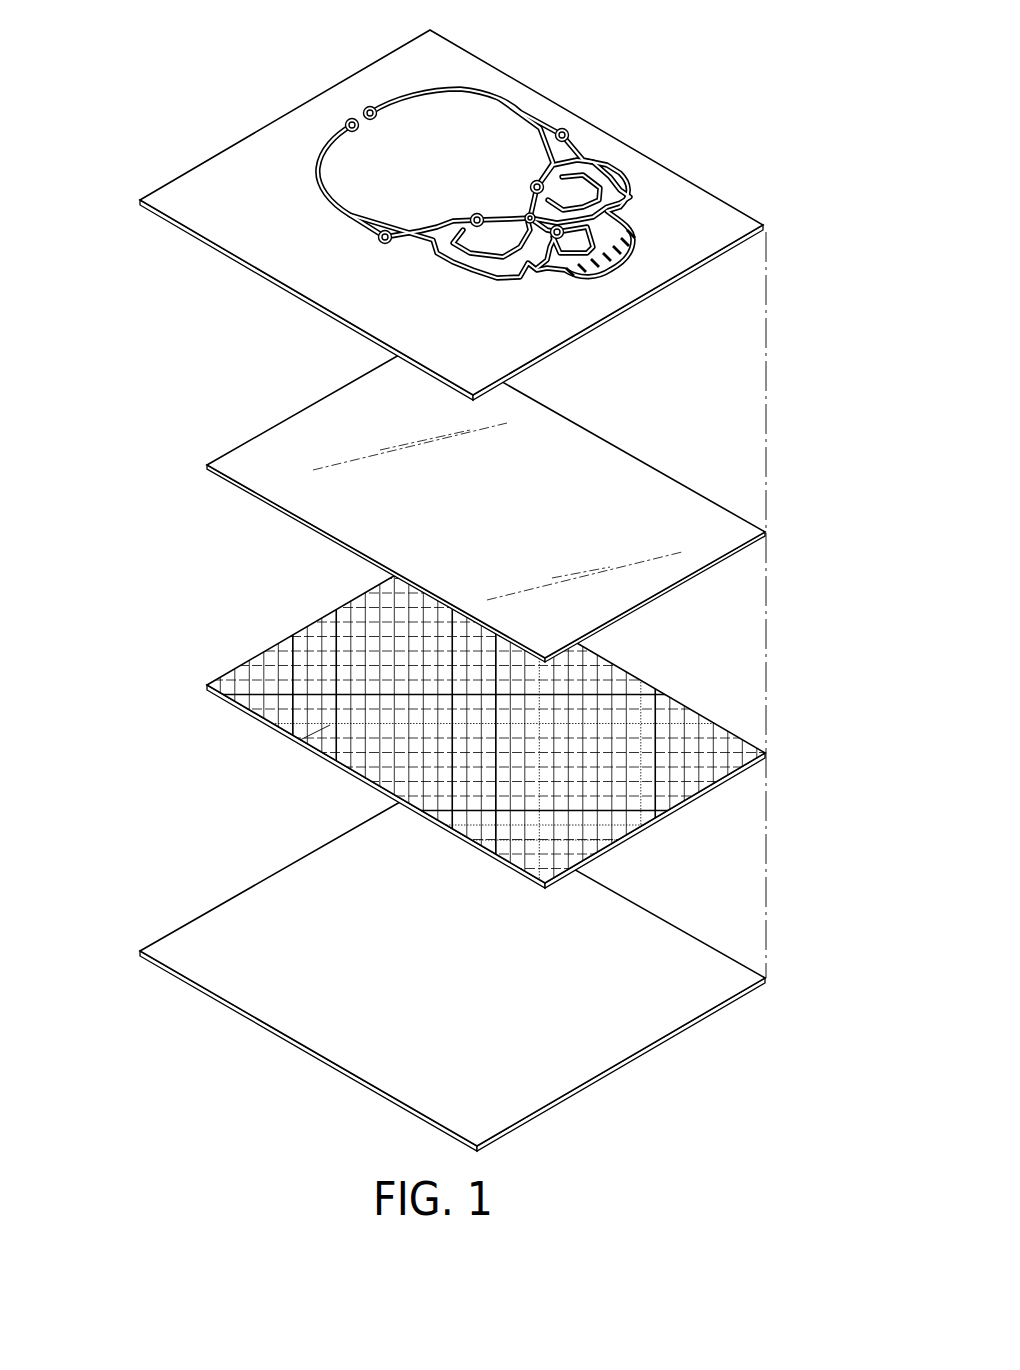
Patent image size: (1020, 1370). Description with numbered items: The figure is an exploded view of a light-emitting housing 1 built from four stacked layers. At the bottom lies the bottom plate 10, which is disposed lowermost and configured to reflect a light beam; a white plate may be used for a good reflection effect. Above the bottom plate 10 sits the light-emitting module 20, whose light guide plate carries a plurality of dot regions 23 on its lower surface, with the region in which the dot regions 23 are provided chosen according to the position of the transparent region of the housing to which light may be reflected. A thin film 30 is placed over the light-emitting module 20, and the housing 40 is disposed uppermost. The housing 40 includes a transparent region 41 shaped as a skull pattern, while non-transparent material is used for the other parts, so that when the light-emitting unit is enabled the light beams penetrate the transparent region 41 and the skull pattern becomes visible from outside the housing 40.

The light-emitting housing 1 is at (120, 82).
The bottom plate 10 is at (717, 896).
The light-emitting module 20 is at (711, 692).
The dot regions 23 is at (330, 725).
The thin film 30 is at (716, 444).
The housing 40 is at (705, 149).
The transparent region 41 is at (585, 272).